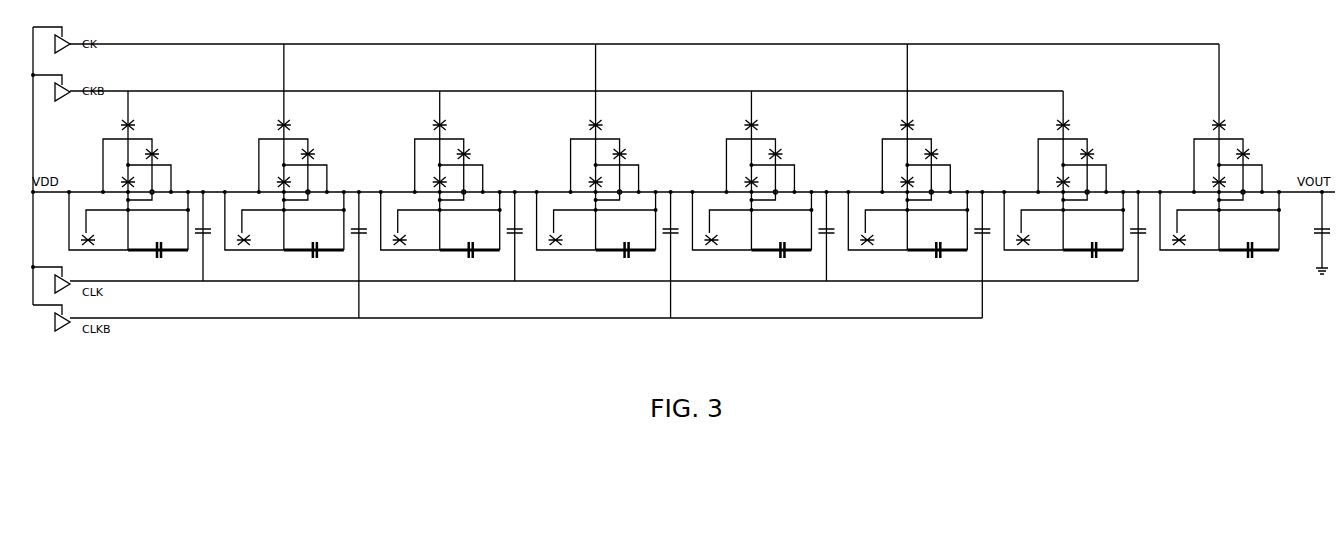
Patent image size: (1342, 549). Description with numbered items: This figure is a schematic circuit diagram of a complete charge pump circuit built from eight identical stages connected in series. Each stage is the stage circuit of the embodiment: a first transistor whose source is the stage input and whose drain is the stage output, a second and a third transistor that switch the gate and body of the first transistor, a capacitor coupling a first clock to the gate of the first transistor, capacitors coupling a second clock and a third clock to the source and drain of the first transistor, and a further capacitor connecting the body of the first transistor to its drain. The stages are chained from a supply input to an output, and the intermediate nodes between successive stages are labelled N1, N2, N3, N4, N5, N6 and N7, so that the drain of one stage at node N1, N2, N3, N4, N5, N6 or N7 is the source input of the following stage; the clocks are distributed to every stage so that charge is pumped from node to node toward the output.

The node N1 is at (204, 228).
The node N2 is at (360, 246).
The node N3 is at (516, 228).
The node N4 is at (672, 246).
The node N5 is at (827, 228).
The node N6 is at (983, 246).
The node N7 is at (1139, 228).